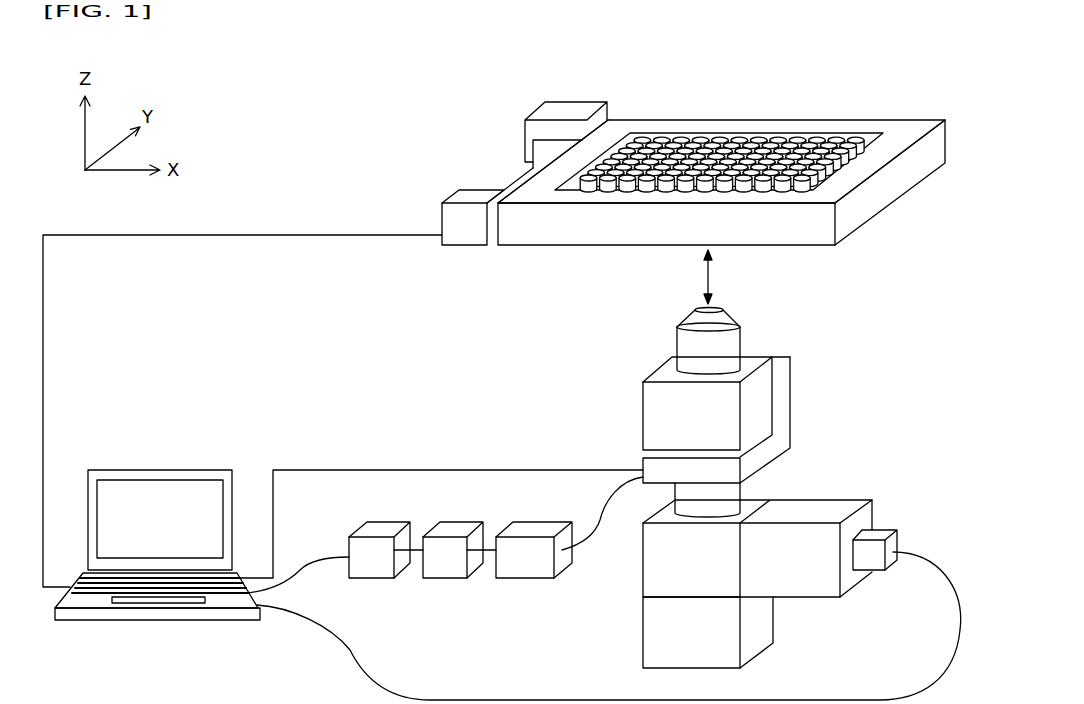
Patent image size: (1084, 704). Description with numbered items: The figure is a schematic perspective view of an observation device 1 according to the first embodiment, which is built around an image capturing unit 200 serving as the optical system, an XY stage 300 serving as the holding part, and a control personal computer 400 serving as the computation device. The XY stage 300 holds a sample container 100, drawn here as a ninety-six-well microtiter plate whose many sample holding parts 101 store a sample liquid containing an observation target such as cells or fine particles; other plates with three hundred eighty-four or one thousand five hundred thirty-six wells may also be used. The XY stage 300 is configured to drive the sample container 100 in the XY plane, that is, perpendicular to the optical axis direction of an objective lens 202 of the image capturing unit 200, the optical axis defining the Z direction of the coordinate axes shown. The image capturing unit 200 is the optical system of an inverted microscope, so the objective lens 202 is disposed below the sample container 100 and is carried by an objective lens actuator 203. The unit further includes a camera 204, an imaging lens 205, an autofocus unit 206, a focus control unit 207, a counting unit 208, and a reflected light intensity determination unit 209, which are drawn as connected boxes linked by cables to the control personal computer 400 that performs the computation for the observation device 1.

The observation device 1 is at (338, 146).
The sample container 100 is at (637, 140).
The sample holding parts 101 is at (792, 138).
The XY stage 300 is at (537, 118).
The image capturing unit 200 is at (868, 320).
The objective lens 202 is at (676, 327).
The objective lens actuator 203 is at (790, 380).
The camera 204 is at (880, 535).
The imaging lens 205 is at (810, 507).
The autofocus unit 206 is at (757, 642).
The focus control unit 207 is at (527, 575).
The counting unit 208 is at (450, 575).
The reflected light intensity determination unit 209 is at (380, 575).
The control personal computer 400 is at (157, 473).